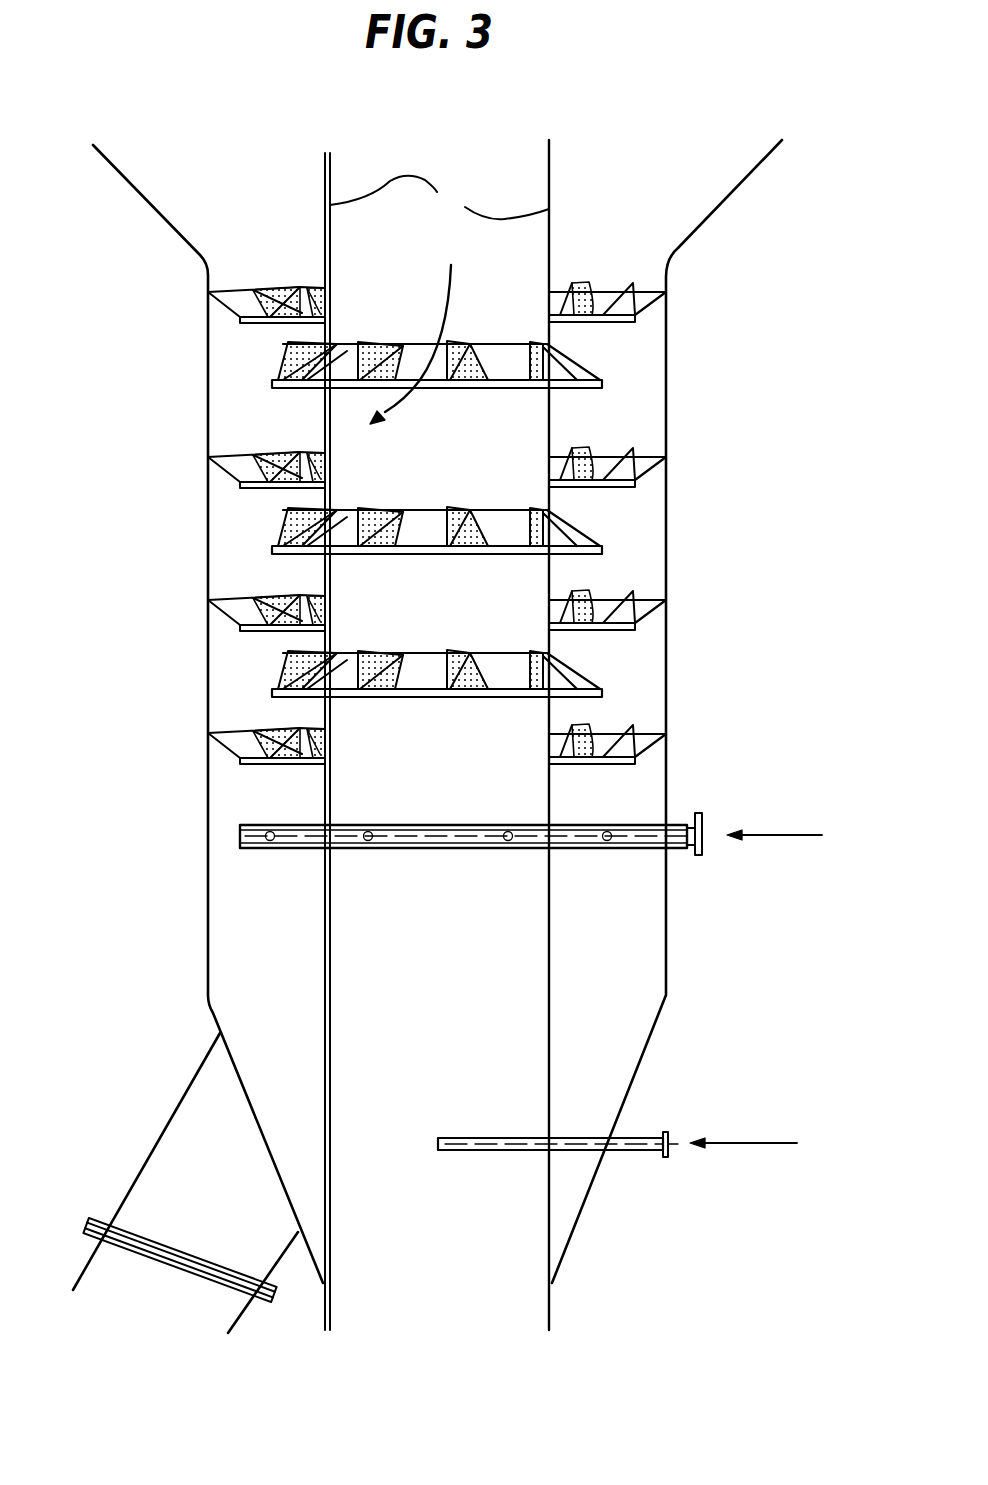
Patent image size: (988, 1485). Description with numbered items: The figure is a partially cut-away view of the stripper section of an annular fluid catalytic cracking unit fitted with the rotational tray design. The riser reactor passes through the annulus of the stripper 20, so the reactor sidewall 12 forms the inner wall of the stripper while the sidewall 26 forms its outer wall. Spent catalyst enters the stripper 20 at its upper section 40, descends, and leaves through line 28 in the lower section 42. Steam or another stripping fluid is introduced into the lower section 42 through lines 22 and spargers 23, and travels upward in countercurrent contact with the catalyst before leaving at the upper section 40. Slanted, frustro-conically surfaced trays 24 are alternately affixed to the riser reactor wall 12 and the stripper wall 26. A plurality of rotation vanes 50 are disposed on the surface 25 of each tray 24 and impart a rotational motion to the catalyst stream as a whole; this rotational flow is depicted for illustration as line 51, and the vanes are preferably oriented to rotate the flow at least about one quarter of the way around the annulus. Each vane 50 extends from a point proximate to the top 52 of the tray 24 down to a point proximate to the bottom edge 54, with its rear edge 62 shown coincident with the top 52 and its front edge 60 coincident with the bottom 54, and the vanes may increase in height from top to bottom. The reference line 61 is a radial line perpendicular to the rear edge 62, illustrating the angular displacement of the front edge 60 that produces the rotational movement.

The sidewall of the riser reactor 12 is at (439, 198).
The stripper 20 is at (176, 531).
The line 22 is at (803, 835).
The sparger 23 is at (602, 848).
The tray 24 is at (647, 727).
The surface of the tray 25 is at (427, 523).
The sidewall of the stripper 26 is at (668, 537).
The line 28 is at (148, 1153).
The upper section 40 is at (235, 199).
The lower section 42 is at (287, 993).
The rotation vane 50 is at (370, 342).
The line depicting rotational flow 51 is at (452, 285).
The top of the tray 52 is at (485, 345).
The bottom edge of the tray 54 is at (462, 388).
The front edge of the vane 60 is at (360, 508).
The reference line 61 is at (400, 673).
The rear edge of the vane 62 is at (403, 510).